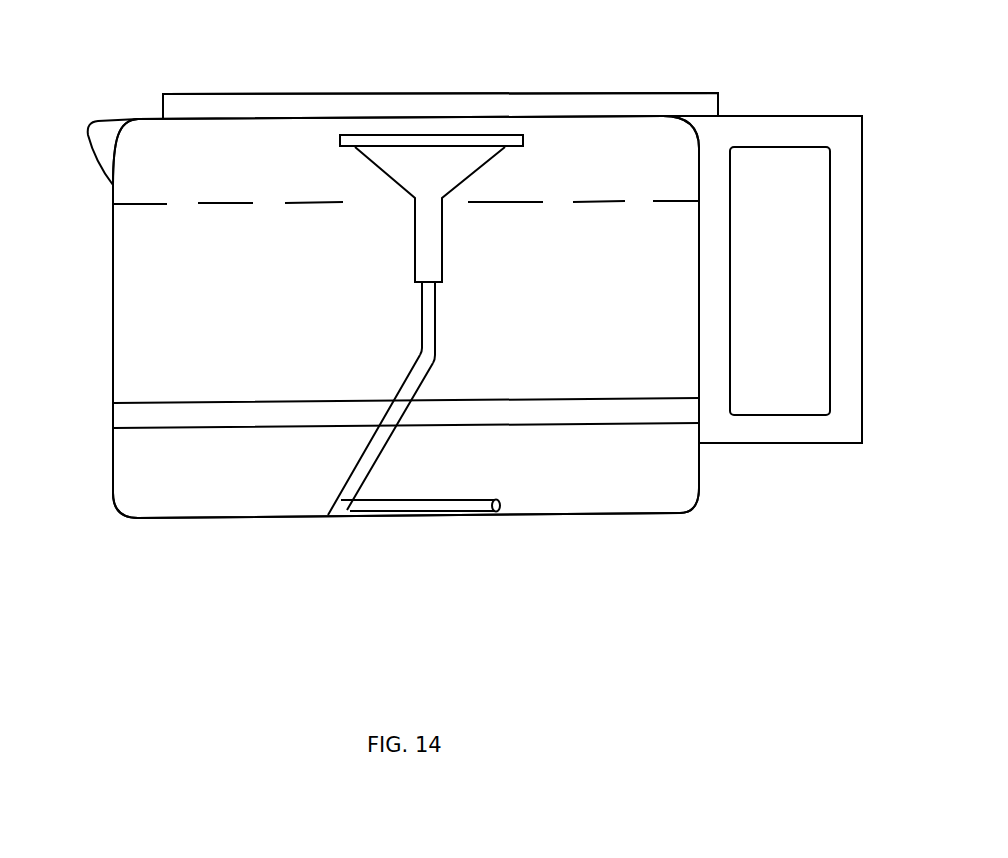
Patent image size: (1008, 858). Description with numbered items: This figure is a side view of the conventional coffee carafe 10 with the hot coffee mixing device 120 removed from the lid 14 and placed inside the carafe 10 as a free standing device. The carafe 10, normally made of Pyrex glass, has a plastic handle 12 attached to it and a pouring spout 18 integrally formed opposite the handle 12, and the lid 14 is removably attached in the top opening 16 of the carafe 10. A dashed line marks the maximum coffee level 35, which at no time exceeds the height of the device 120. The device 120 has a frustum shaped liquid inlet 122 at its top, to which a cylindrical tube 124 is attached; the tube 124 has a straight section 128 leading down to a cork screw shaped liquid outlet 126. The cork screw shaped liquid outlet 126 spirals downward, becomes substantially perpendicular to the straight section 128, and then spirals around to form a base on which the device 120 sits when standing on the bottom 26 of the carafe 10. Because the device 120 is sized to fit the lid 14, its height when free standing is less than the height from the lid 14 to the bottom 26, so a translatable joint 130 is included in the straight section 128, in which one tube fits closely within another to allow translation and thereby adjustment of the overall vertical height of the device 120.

The coffee carafe 10 is at (150, 551).
The handle 12 is at (788, 443).
The lid 14 is at (247, 94).
The top opening 16 is at (225, 129).
The pouring spout 18 is at (102, 168).
The bottom 26 is at (215, 518).
The maximum coffee level 35 is at (590, 203).
The hot coffee mixing device 120 is at (418, 325).
The liquid inlet 122 is at (438, 109).
The tube 124 is at (433, 358).
The cork screw shaped liquid outlet 126 is at (359, 439).
The straight section 128 is at (437, 335).
The translatable joint 130 is at (451, 277).